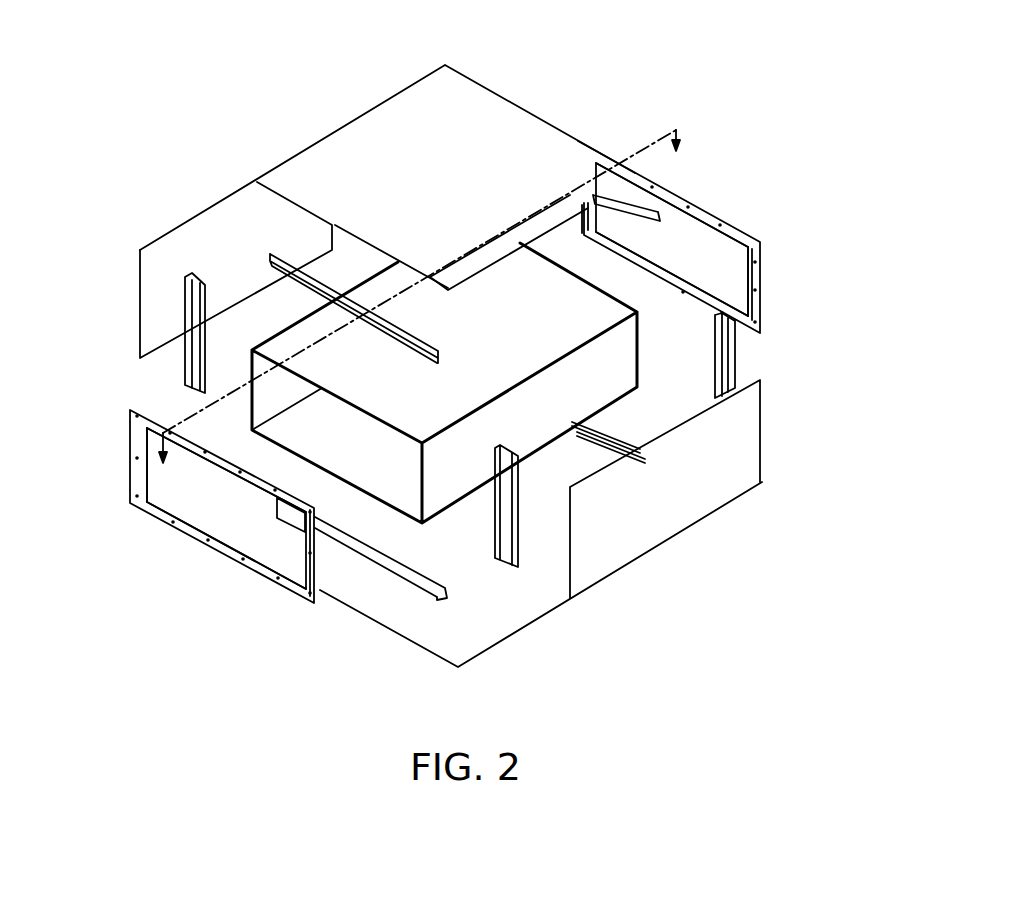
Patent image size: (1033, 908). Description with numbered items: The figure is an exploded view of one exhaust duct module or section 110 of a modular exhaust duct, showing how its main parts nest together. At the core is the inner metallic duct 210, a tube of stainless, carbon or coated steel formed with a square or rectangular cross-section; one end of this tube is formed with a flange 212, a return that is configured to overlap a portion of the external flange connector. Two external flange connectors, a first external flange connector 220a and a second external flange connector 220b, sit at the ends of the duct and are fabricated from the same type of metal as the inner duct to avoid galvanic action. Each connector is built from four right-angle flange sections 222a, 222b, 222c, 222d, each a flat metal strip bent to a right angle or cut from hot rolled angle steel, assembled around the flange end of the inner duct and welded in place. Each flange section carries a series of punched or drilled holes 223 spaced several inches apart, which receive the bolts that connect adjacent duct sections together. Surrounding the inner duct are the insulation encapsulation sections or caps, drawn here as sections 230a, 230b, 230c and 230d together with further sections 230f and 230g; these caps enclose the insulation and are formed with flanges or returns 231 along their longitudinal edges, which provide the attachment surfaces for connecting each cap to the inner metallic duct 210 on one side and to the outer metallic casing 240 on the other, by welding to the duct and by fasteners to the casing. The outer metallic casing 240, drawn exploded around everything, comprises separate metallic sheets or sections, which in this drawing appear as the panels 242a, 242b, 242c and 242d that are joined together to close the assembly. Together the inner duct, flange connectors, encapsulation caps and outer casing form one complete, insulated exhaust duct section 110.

The exhaust duct section 110 is at (703, 118).
The inner metallic duct 210 is at (364, 449).
The flange 212 is at (403, 500).
The first external flange connector 220a is at (235, 541).
The second external flange connector 220b is at (713, 205).
The flange section 222a is at (182, 529).
The flange section 222b is at (138, 452).
The flange section 222c is at (220, 461).
The flange section 222d is at (287, 573).
The holes 223 is at (212, 442).
The encapsulation section 230a is at (397, 578).
The encapsulation section 230b is at (187, 364).
The encapsulation section 230c is at (438, 354).
The encapsulation section 230d is at (502, 553).
The encapsulation section 230f is at (660, 222).
The encapsulation section 230g is at (736, 360).
The flanges 231 is at (443, 430).
The outer metallic casing 240 is at (698, 539).
The bottom panel 242a is at (523, 630).
The left side panel 242b is at (170, 258).
The top panel 242c is at (381, 200).
The right side panel 242d is at (737, 466).